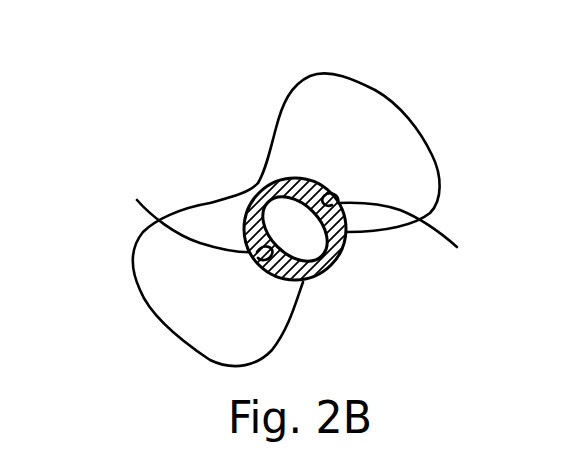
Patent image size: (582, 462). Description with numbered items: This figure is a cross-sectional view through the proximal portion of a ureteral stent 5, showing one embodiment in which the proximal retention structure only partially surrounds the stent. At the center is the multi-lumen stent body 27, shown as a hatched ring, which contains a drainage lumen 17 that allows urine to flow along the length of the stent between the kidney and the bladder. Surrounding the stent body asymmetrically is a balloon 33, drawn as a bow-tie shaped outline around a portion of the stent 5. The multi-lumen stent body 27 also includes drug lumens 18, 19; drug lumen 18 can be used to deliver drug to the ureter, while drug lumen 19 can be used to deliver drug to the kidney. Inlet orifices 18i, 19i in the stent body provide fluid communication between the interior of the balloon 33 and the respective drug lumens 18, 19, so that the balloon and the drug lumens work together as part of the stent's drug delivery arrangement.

The stent 5 is at (11, 161).
The drainage lumen 17 is at (310, 247).
The drug lumen 18 is at (178, 211).
The inlet orifice 18i is at (266, 263).
The drug lumen 19 is at (415, 241).
The inlet orifice 19i is at (330, 195).
The multi-lumen stent body 27 is at (256, 194).
The balloon 33 is at (310, 92).